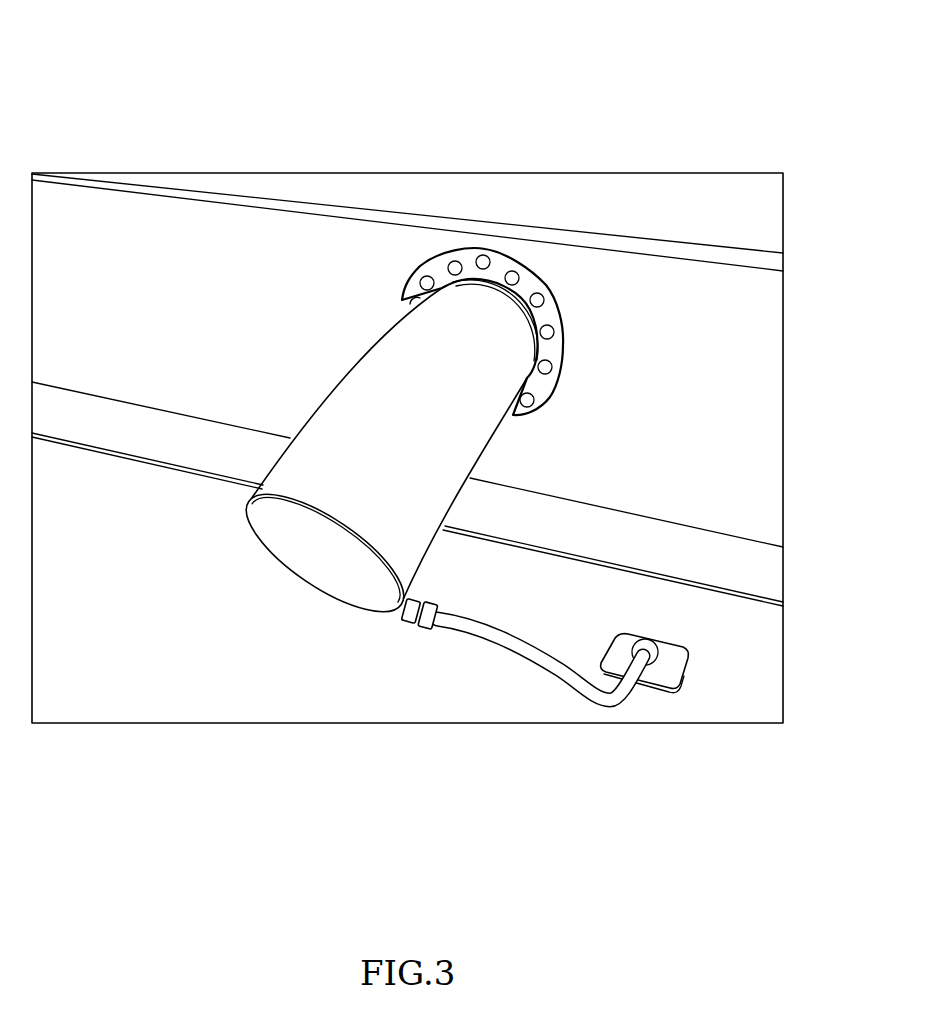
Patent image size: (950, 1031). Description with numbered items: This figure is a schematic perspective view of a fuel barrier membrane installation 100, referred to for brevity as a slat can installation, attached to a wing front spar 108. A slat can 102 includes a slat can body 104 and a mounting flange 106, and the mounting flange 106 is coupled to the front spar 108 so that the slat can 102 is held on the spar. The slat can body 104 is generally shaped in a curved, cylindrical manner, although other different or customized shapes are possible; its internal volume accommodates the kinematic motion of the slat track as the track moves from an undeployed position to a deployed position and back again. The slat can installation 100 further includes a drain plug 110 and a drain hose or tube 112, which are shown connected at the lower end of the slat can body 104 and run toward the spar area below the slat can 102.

The fuel barrier membrane installation 100 is at (243, 112).
The slat can 102 is at (583, 427).
The slat can body 104 is at (303, 550).
The mounting flange 106 is at (557, 305).
The front spar 108 is at (524, 232).
The drain plug 110 is at (411, 628).
The drain hose or tube 112 is at (604, 704).